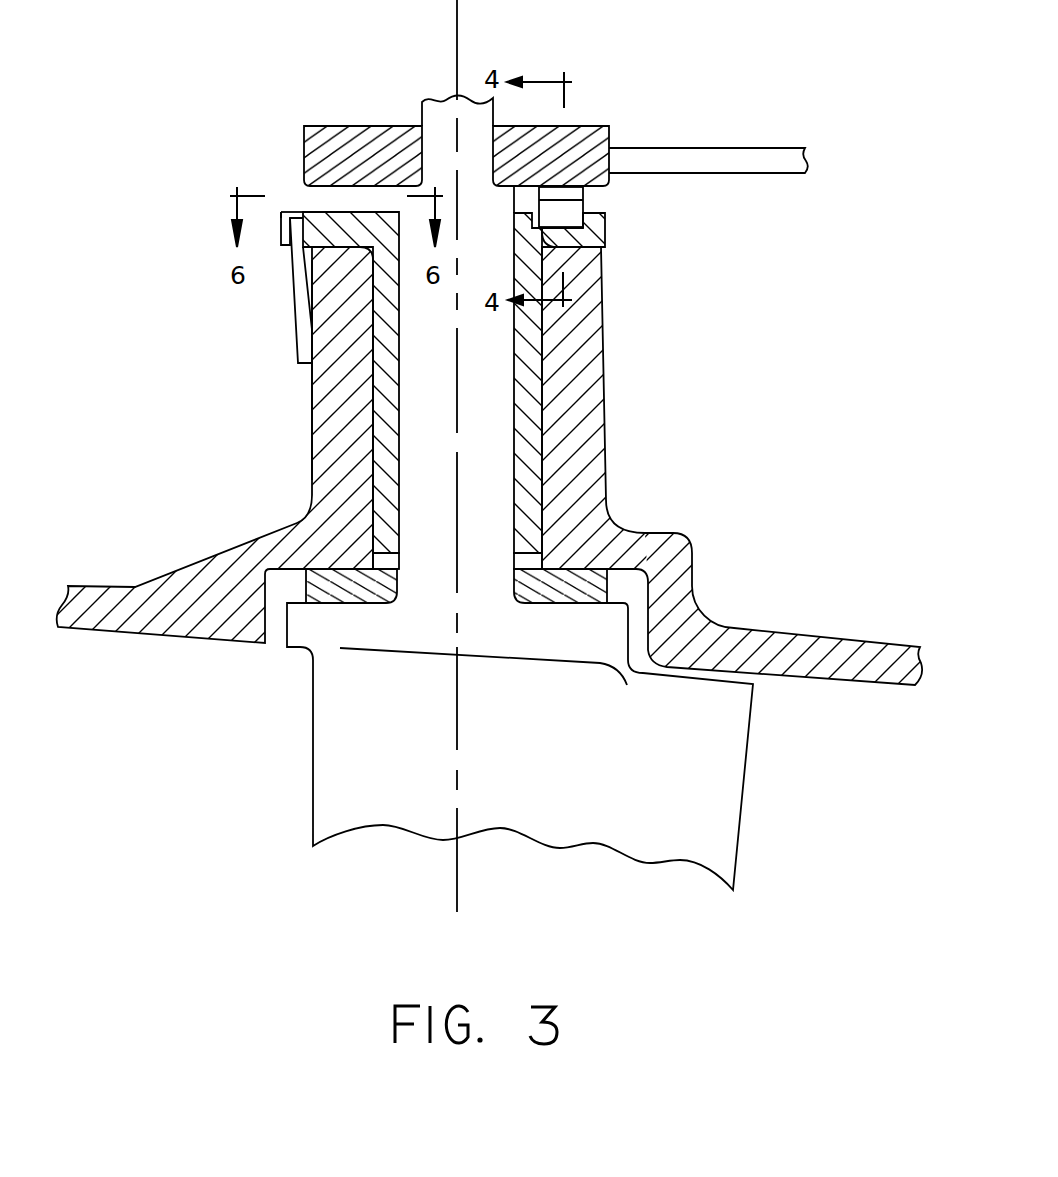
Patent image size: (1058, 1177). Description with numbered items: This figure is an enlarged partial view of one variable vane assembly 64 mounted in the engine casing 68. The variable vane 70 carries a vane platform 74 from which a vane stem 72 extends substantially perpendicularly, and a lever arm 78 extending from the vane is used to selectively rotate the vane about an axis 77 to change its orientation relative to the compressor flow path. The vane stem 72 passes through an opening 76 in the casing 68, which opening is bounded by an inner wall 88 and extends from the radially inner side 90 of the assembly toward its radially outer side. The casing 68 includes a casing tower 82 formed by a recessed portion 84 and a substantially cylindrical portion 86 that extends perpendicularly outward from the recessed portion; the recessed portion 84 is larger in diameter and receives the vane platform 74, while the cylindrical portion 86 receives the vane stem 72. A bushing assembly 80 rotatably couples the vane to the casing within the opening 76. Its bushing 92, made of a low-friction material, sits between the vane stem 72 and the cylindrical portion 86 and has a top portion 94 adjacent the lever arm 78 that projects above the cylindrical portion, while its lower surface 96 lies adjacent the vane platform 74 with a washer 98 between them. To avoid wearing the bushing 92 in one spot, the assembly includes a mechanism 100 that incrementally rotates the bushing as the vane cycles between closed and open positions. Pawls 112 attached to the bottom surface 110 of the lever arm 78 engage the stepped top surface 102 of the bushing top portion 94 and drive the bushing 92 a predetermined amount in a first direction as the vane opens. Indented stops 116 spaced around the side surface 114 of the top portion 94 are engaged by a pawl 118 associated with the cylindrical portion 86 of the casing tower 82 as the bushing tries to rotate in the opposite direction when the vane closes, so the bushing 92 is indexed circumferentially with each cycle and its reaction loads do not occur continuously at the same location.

The variable vane assembly 64 is at (682, 54).
The casing 68 is at (807, 645).
The variable vane 70 is at (646, 790).
The vane stem 72 is at (504, 376).
The vane platform 74 is at (616, 639).
The opening 76 is at (276, 656).
The axis 77 is at (459, 29).
The lever arm 78 is at (583, 135).
The bushing assembly 80 is at (618, 228).
The casing tower 82 is at (219, 542).
The recessed portion 84 is at (233, 608).
The cylindrical portion 86 is at (330, 427).
The inner wall 88 is at (378, 372).
The radially inner side 90 is at (782, 714).
The bushing 92 is at (522, 440).
The top portion 94 is at (578, 245).
The lower surface 96 is at (514, 558).
The washer 98 is at (562, 592).
The mechanism 100 is at (738, 202).
The top surface 102 is at (603, 212).
The bottom surface 110 is at (308, 188).
The pawl 112 is at (558, 212).
The side surface 114 is at (282, 232).
The indented stop 116 is at (281, 198).
The pawl 118 is at (293, 300).